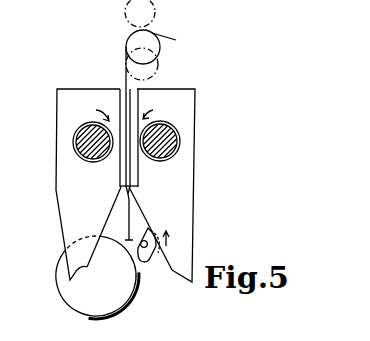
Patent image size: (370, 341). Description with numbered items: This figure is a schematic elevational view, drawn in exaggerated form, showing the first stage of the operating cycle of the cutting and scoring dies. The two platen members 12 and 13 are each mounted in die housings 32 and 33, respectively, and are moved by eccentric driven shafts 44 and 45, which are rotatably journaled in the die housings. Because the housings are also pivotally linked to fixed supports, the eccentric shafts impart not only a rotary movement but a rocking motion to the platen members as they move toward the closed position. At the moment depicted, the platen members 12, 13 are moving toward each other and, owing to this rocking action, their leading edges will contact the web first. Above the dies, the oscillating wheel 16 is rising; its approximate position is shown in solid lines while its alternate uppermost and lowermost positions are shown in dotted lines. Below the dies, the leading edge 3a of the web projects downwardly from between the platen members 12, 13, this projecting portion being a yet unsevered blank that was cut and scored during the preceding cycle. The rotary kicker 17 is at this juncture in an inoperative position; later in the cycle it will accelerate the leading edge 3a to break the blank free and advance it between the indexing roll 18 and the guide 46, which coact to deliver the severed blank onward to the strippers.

The leading edge of the web 3a is at (131, 220).
The platen member 12 is at (138, 110).
The platen member 13 is at (119, 98).
The oscillating wheel 16 is at (158, 50).
The rotary kicker 17 is at (148, 262).
The indexing roll 18 is at (107, 290).
The die housing 32 is at (195, 141).
The die housing 33 is at (58, 144).
The eccentric driven shaft 44 is at (159, 161).
The eccentric driven shaft 45 is at (93, 162).
The guide 46 is at (128, 306).